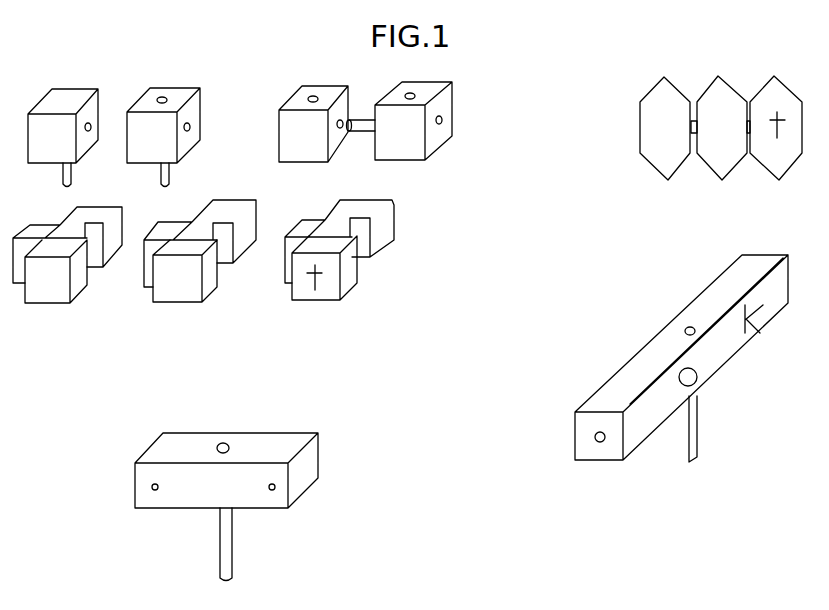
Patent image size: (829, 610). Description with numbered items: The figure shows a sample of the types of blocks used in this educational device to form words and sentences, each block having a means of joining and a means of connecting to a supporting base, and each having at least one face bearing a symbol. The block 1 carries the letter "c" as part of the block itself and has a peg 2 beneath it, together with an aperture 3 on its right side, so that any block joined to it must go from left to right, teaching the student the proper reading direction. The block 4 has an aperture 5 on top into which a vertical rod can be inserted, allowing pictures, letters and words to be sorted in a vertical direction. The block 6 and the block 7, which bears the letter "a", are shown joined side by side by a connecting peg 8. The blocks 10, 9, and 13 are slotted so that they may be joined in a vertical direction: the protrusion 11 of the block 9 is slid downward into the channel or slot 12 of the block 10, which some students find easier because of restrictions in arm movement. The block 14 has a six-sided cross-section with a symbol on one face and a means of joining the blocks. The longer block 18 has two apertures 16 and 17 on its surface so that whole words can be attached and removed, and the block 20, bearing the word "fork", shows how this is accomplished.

The block 1 is at (43, 102).
The peg 2 is at (62, 174).
The aperture 3 is at (91, 124).
The block 4 is at (143, 103).
The aperture 5 is at (167, 98).
The block 6 is at (322, 83).
The block 7 is at (460, 108).
The peg 8 is at (362, 110).
The block 9 is at (182, 303).
The block 10 is at (29, 306).
The protrusion 11 is at (144, 272).
The channel or slot 12 is at (97, 278).
The block 13 is at (313, 302).
The block 14 is at (638, 157).
The aperture 16 is at (154, 490).
The aperture 17 is at (273, 490).
The block 18 is at (266, 433).
The block 20 is at (753, 338).